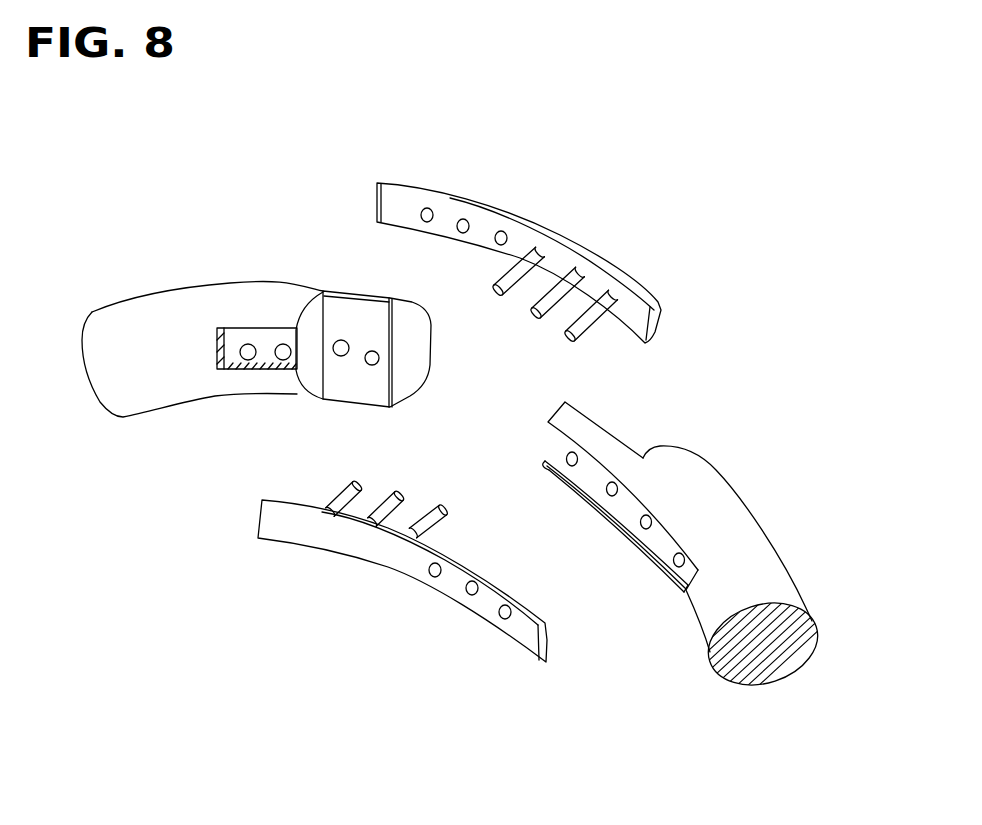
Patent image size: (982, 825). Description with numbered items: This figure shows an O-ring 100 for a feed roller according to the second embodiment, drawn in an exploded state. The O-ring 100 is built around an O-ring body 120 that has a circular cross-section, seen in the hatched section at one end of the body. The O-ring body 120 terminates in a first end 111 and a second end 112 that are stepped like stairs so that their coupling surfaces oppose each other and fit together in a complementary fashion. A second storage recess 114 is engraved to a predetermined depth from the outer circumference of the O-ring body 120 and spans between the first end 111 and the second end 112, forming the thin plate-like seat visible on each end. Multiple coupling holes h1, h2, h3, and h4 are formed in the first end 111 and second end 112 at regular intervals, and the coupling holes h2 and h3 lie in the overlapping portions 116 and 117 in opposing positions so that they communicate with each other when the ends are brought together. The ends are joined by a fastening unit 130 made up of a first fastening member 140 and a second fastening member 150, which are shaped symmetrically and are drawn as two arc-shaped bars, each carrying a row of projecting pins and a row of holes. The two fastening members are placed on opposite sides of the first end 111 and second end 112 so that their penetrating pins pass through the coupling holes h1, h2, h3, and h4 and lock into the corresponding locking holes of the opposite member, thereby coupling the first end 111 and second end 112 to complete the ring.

The O-ring 100 is at (742, 416).
The first end 111 is at (287, 288).
The second end 112 is at (663, 472).
The second storage recess 114 is at (270, 362).
The overlapping portion 116 is at (377, 288).
The overlapping portion 117 is at (580, 425).
The O-ring body 120 is at (710, 532).
The fastening unit 130 is at (591, 223).
The first fastening member 140 is at (648, 272).
The second fastening member 150 is at (495, 634).
The coupling hole h1 is at (672, 545).
The coupling hole h2 is at (370, 365).
The coupling hole h3 is at (340, 360).
The coupling hole h4 is at (277, 340).